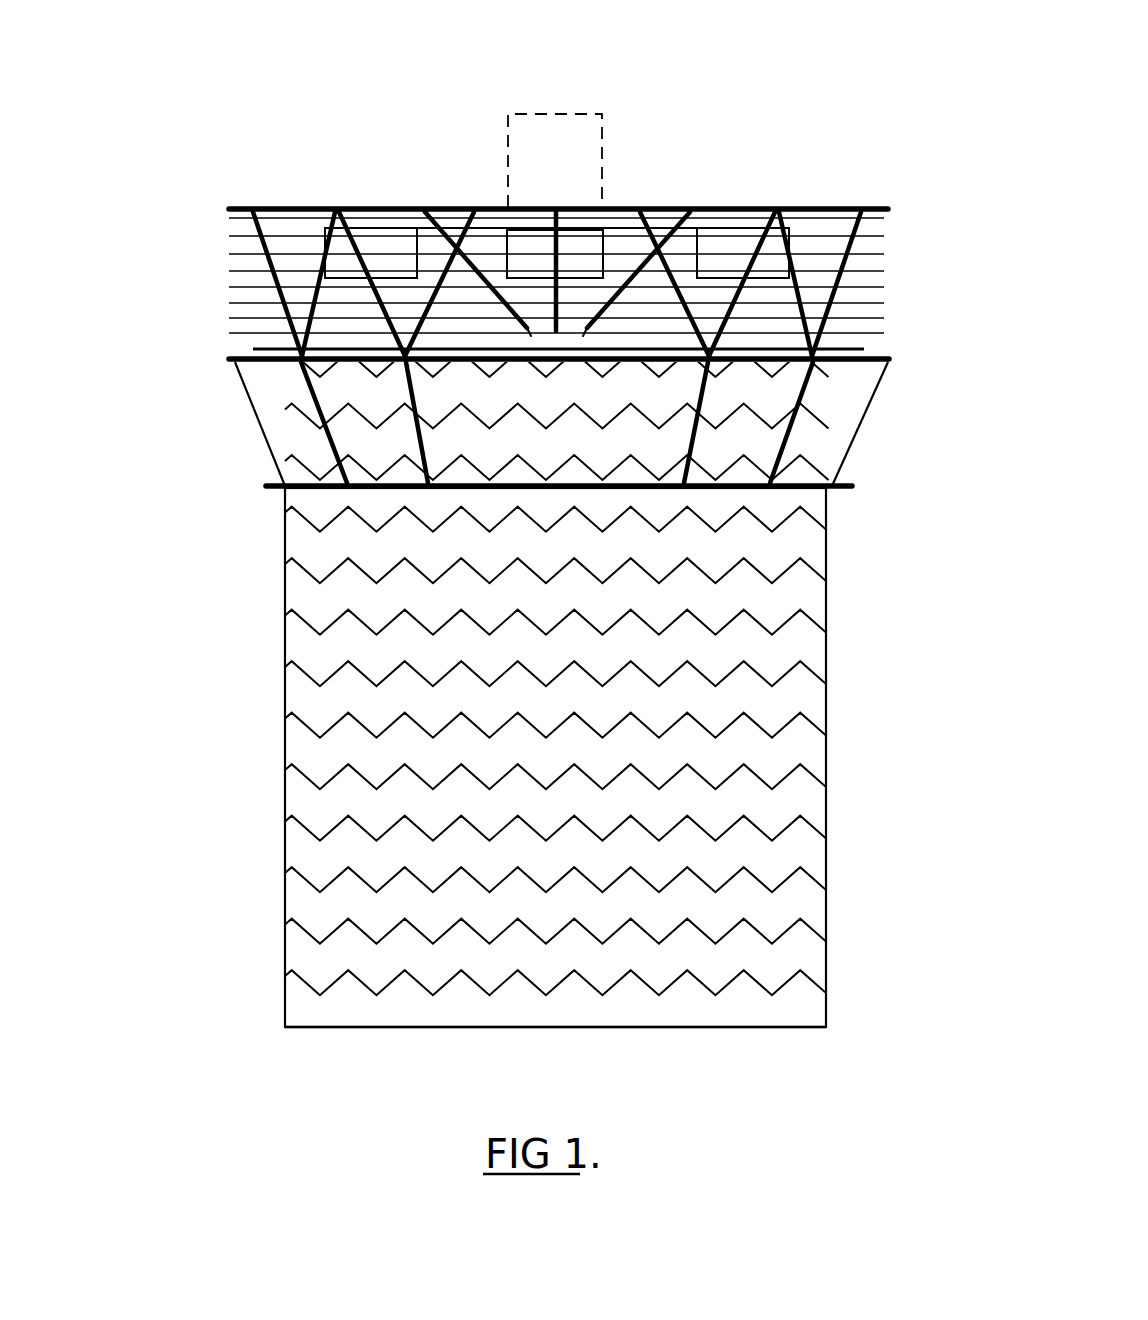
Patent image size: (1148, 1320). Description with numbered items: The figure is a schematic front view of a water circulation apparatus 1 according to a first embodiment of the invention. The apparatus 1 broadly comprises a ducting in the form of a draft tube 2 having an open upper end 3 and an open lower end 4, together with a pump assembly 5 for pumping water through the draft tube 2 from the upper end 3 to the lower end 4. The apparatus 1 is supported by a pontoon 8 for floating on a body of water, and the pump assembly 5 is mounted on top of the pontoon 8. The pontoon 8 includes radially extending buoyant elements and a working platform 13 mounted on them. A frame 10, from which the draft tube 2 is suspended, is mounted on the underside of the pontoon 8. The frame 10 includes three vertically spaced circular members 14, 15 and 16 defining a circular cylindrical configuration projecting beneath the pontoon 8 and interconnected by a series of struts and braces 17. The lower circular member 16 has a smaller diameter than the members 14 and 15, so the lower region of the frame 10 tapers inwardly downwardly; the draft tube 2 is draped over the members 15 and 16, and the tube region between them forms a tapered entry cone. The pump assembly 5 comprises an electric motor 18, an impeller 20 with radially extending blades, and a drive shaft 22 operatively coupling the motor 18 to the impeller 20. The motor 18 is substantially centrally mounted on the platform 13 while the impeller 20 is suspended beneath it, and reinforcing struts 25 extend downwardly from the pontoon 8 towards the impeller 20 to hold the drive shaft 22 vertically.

The water circulation apparatus 1 is at (297, 113).
The draft tube 2 is at (772, 802).
The open upper end 3 is at (217, 373).
The open lower end 4 is at (268, 1027).
The pump assembly 5 is at (500, 250).
The pontoon 8 is at (263, 262).
The frame 10 is at (866, 240).
The working platform 13 is at (690, 207).
The circular member 14 is at (243, 205).
The circular member 15 is at (235, 366).
The lower circular member 16 is at (268, 490).
The struts and braces 17 is at (287, 292).
The electric motor 18 is at (568, 112).
The impeller 20 is at (684, 349).
The drive shaft 22 is at (432, 207).
The reinforcing struts 25 is at (638, 207).